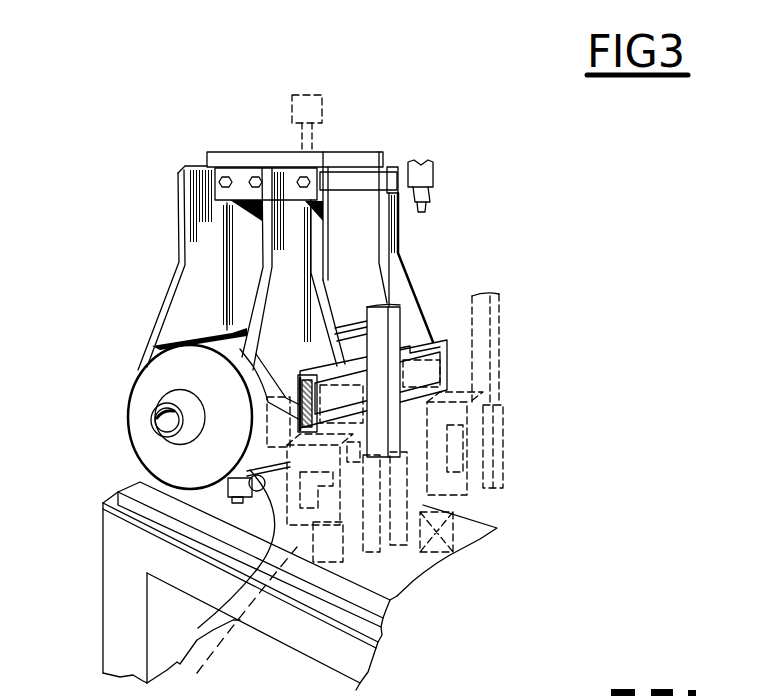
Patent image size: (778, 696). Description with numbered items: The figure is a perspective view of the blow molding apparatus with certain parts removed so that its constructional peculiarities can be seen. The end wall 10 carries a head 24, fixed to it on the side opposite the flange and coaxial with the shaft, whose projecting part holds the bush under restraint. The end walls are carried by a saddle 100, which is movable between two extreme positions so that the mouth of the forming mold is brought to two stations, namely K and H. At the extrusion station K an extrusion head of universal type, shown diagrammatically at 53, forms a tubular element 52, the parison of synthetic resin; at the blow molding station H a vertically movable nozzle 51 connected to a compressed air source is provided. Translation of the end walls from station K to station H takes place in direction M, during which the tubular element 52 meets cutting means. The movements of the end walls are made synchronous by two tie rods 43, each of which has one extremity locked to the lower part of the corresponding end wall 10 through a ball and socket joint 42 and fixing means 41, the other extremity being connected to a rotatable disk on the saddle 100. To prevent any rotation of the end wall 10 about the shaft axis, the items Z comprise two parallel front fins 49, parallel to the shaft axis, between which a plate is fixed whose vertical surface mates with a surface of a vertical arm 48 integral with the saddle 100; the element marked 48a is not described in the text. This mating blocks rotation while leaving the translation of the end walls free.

The end wall 10 is at (243, 225).
The head 24 is at (162, 385).
The fixing means 41 is at (215, 567).
The ball and socket joint 42 is at (213, 503).
The tie rod 43 is at (190, 605).
The vertical arm 48 is at (241, 583).
The support block 48a is at (303, 423).
The front fin 49 is at (305, 380).
The nozzle 51 is at (420, 170).
The tubular element 52 is at (308, 135).
The extrusion head 53 is at (310, 95).
The saddle 100 is at (218, 525).
The extrusion station K is at (286, 118).
The blow molding station H is at (437, 204).
The items preventing rotation Z is at (291, 370).
The direction of translation M is at (487, 567).